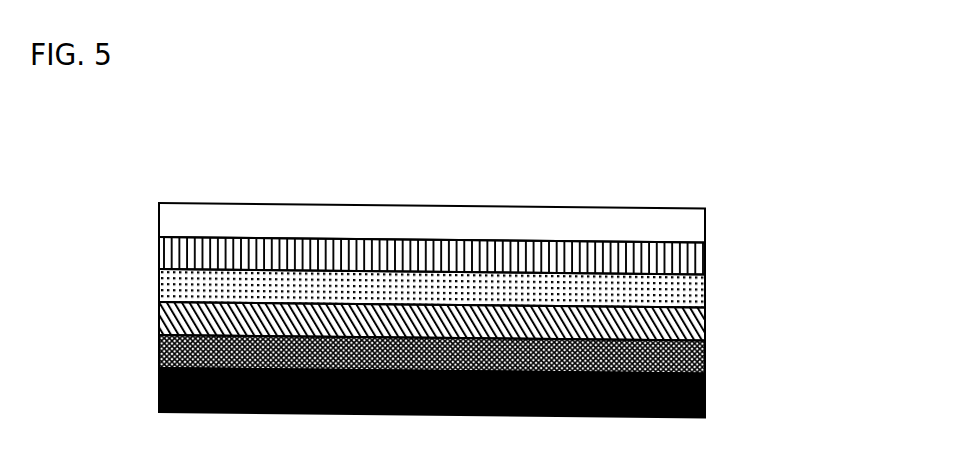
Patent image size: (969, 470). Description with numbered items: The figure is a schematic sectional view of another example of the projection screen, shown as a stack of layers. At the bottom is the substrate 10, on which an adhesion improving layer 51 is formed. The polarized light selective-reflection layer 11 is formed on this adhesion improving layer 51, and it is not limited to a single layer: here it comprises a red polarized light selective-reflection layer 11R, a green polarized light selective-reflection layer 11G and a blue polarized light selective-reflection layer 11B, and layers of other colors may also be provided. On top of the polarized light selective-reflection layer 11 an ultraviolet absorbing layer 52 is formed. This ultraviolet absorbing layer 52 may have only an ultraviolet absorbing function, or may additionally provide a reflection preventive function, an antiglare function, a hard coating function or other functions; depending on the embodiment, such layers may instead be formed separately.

The substrate 10 is at (705, 391).
The adhesion improving layer 51 is at (683, 357).
The polarized light selective-reflection layer 11 is at (538, 291).
The red polarized light selective-reflection layer 11R is at (685, 268).
The green polarized light selective-reflection layer 11G is at (686, 292).
The blue polarized light selective-reflection layer 11B is at (683, 327).
The ultraviolet absorbing layer 52 is at (678, 231).